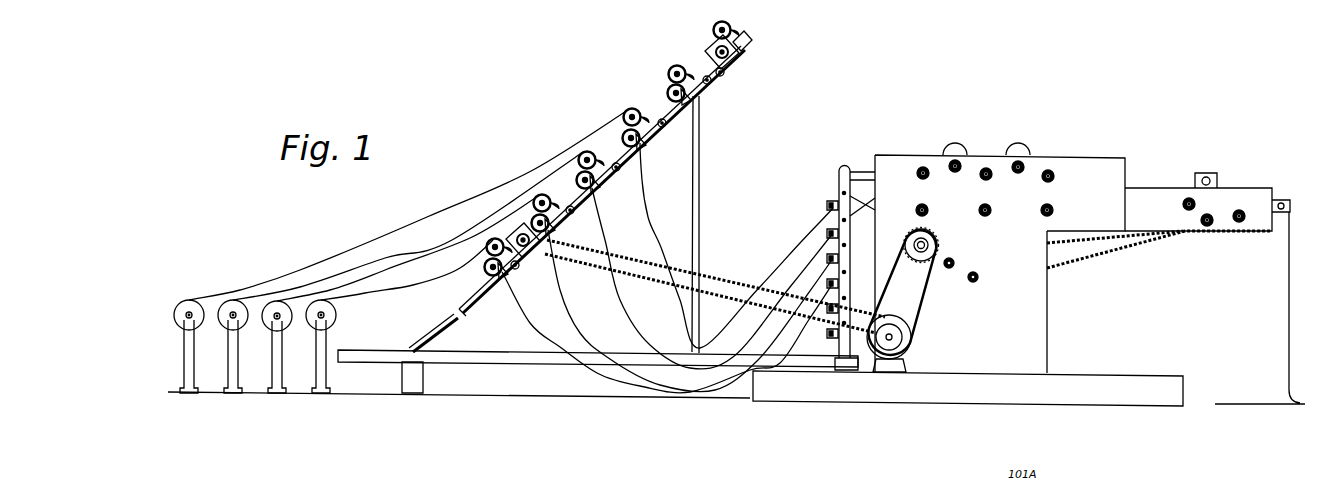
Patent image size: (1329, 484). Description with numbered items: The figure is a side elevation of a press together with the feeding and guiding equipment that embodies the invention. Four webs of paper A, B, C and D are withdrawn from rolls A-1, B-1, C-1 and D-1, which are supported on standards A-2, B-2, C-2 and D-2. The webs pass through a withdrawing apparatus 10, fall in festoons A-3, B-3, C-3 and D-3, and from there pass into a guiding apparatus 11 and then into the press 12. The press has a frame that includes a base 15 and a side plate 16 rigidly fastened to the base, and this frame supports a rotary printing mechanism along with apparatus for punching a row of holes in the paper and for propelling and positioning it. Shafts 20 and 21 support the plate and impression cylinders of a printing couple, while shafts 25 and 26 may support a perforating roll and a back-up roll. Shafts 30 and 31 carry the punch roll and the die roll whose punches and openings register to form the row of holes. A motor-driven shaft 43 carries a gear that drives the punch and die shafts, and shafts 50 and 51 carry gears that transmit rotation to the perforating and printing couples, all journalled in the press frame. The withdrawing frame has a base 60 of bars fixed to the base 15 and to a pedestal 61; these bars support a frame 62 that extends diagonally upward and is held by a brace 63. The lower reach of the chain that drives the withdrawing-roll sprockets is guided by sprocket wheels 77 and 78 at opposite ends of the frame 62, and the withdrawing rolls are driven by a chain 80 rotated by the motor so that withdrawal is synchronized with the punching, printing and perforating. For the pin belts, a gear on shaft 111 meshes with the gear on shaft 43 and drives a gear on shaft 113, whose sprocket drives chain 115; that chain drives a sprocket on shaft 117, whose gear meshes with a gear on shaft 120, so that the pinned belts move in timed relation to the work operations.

The roll A-1 is at (187, 302).
The roll B-1 is at (233, 300).
The roll C-1 is at (285, 318).
The roll D-1 is at (336, 322).
The standard A-2 is at (193, 372).
The standard B-2 is at (238, 373).
The standard C-2 is at (282, 379).
The standard D-2 is at (329, 375).
The web A is at (376, 249).
The web B is at (452, 239).
The web C is at (386, 271).
The web D is at (413, 286).
The festoon A-3 is at (806, 252).
The festoon B-3 is at (790, 287).
The festoon C-3 is at (765, 338).
The festoon D-3 is at (728, 378).
The withdrawing apparatus 10 is at (667, 138).
The guiding apparatus 11 is at (842, 181).
The press 12 is at (1109, 154).
The base 15 is at (1177, 373).
The side plate 16 is at (1035, 331).
The shaft 20 is at (1049, 169).
The shaft 21 is at (1053, 207).
The shaft 25 is at (986, 167).
The shaft 26 is at (991, 207).
The shaft 30 is at (923, 166).
The shaft 31 is at (929, 207).
The shaft 43 is at (930, 243).
The shaft 50 is at (955, 159).
The shaft 51 is at (1018, 160).
The base 60 is at (490, 362).
The pedestal 61 is at (408, 374).
The frame 62 is at (740, 50).
The brace 63 is at (700, 162).
The sprocket wheel 77 is at (519, 268).
The sprocket wheel 78 is at (725, 73).
The chain 80 is at (716, 281).
The shaft 111 is at (949, 269).
The shaft 113 is at (979, 281).
The chain 115 is at (1133, 248).
The shaft 117 is at (1207, 227).
The shaft 120 is at (1242, 224).